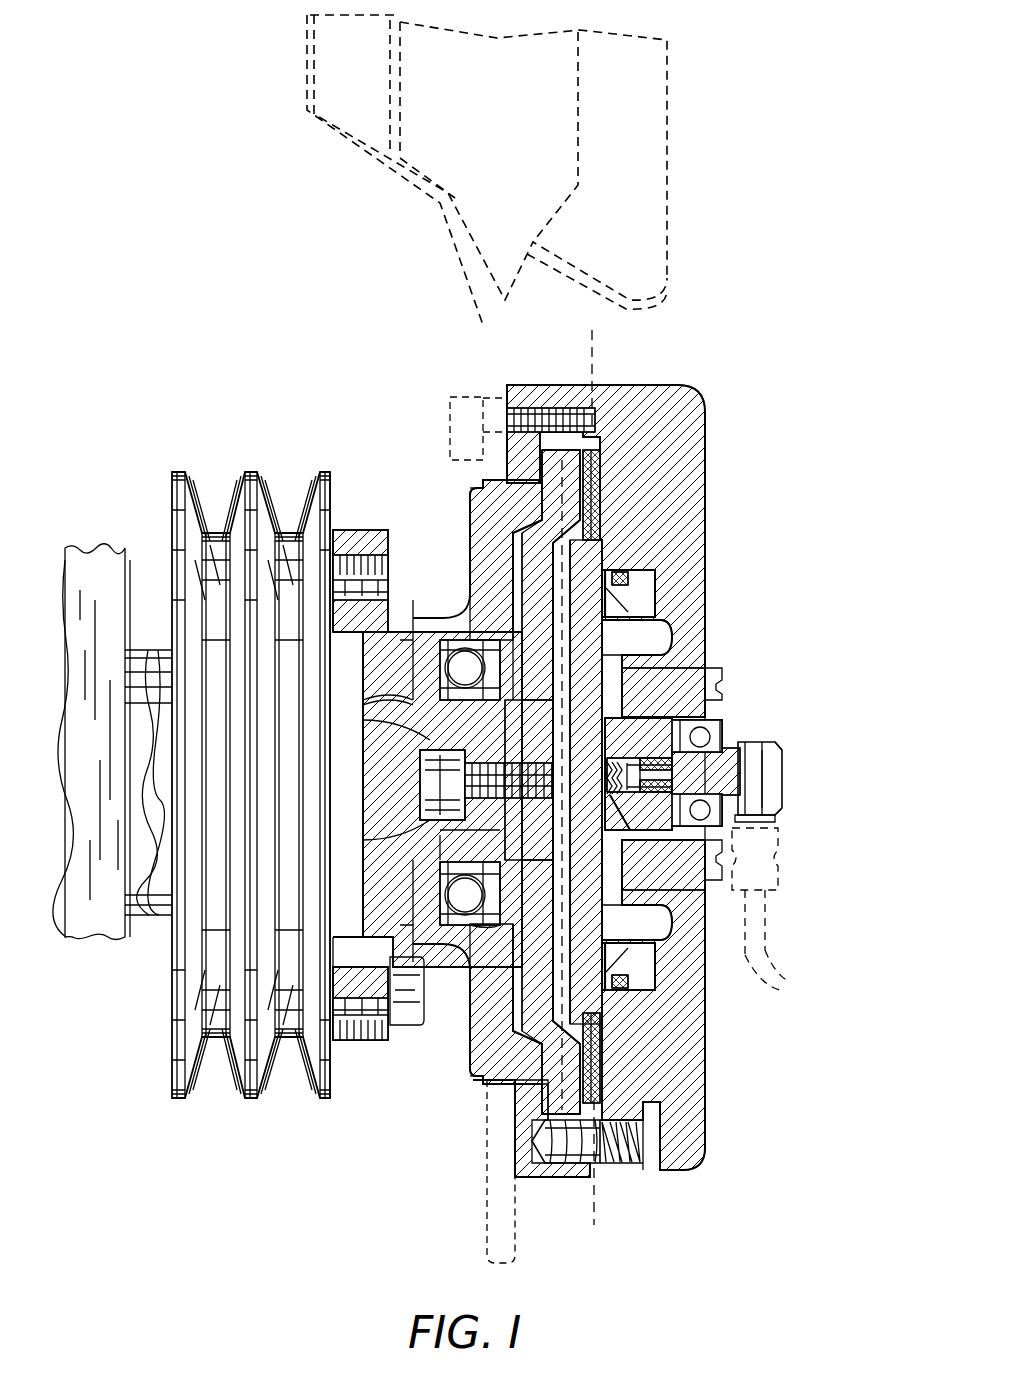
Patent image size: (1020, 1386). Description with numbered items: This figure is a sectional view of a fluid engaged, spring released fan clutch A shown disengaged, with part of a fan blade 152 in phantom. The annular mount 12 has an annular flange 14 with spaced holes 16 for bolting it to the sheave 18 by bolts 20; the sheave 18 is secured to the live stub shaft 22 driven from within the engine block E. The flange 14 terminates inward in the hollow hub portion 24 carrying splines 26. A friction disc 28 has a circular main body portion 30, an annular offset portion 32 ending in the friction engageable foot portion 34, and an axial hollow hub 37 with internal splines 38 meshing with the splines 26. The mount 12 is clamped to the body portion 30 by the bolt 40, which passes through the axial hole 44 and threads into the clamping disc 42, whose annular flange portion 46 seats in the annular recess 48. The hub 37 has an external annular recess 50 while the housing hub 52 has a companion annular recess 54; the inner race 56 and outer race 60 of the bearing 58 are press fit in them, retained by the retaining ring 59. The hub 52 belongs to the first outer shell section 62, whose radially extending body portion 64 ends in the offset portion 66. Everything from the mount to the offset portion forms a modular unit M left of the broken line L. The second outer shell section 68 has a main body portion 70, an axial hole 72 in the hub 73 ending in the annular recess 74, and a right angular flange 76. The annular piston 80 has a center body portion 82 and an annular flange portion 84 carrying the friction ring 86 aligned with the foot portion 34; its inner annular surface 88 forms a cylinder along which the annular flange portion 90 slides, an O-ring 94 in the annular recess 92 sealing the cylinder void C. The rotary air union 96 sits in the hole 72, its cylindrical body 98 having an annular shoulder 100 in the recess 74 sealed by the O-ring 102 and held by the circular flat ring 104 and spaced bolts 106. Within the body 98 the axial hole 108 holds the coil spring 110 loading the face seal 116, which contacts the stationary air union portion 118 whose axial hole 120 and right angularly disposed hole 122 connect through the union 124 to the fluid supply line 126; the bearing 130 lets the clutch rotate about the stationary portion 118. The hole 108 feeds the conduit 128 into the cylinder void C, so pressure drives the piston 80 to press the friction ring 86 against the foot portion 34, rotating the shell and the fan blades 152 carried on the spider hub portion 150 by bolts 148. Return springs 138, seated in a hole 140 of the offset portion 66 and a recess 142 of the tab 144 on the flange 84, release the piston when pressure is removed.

The annular mount 12 is at (328, 612).
The annular flange 14 is at (386, 530).
The spaced holes 16 is at (384, 578).
The sheave 18 is at (258, 480).
The bolts 20 is at (413, 1025).
The live stub shaft 22 is at (155, 650).
The hollow hub portion 24 is at (410, 757).
The splines 26 is at (410, 737).
The friction disc 28 is at (510, 555).
The circular main body portion 30 is at (525, 560).
The annular offset portion 32 is at (485, 484).
The annular friction engageable foot portion 34 is at (472, 487).
The axial hollow hub 37 is at (380, 718).
The internal splines 38 is at (550, 685).
The axially mounted bolt 40 is at (422, 785).
The clamping disc 42 is at (440, 835).
The axial hole 44 is at (470, 768).
The annular flange portion 46 is at (603, 637).
The annular recess 48 is at (552, 705).
The external annular recess 50 is at (440, 842).
The housing hub 52 is at (450, 620).
The companion annular recess 54 is at (470, 930).
The inner race 56 is at (380, 698).
The bearing 58 is at (470, 782).
The retaining ring 59 is at (500, 650).
The outer race 60 is at (390, 640).
The first outer shell section 62 is at (465, 515).
The annular radially extending body portion 64 is at (470, 1072).
The offset portion 66 is at (525, 1155).
The second outer shell section 68 is at (708, 575).
The annular main body portion 70 is at (675, 630).
The axial hole 72 is at (663, 692).
The hub 73 is at (706, 912).
The annular recess 74 is at (663, 865).
The right angular flange 76 is at (650, 392).
The annular piston 80 is at (668, 655).
The circular center body portion 82 is at (625, 665).
The annular flange portion 84 is at (690, 520).
The friction ring 86 is at (605, 458).
The inner annular surface 88 is at (660, 582).
The annular flange portion 90 is at (660, 612).
The annular recess 92 is at (575, 1030).
The O-ring 94 is at (640, 575).
The rotary air union 96 is at (748, 738).
The cylindrical body 98 is at (556, 742).
The annular shoulder 100 is at (722, 722).
The O-ring 102 is at (660, 803).
The circular flat ring 104 is at (750, 900).
The spaced bolts 106 is at (724, 684).
The axial hole 108 is at (606, 768).
The coil spring 110 is at (625, 780).
The face seal 116 is at (658, 757).
The stationary air union portion 118 is at (782, 748).
The axial hole 120 is at (782, 797).
The right angularly disposed hole 122 is at (765, 772).
The union 124 is at (780, 835).
The fluid supply line 126 is at (790, 982).
The conduit 128 is at (602, 835).
The bearing 130 is at (777, 816).
The return springs 138 is at (612, 1165).
The hole 140 is at (576, 1165).
The recess 142 is at (650, 1172).
The tab 144 is at (665, 1150).
The bolts 148 is at (483, 390).
The spider hub portion 150 is at (455, 465).
The fan blades 152 is at (432, 205).
The clutch A is at (808, 468).
The cylinder void C is at (708, 658).
The engine block E is at (90, 545).
The broken line L is at (590, 335).
The modular unit M is at (470, 1082).